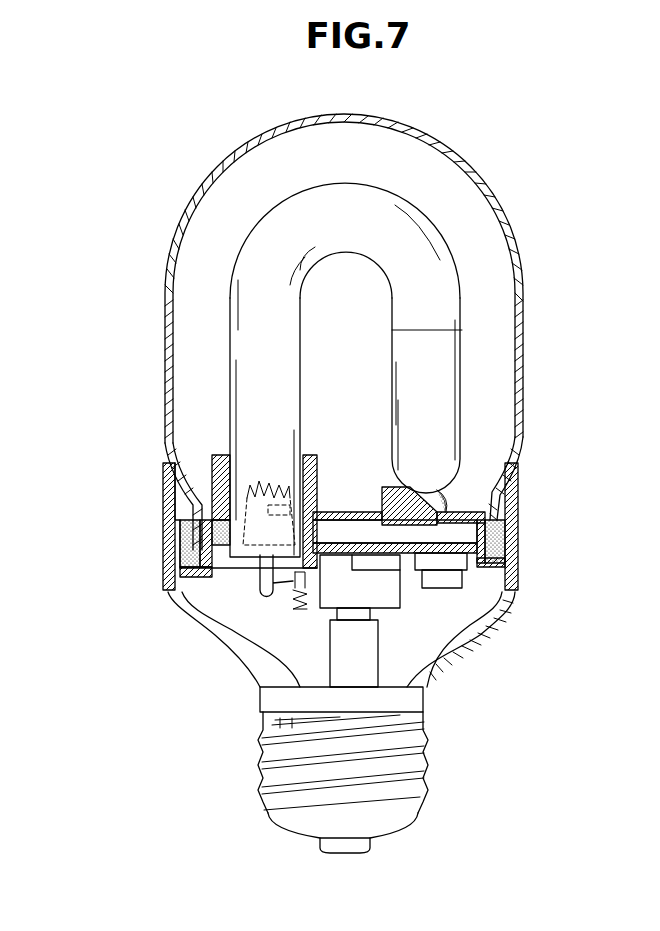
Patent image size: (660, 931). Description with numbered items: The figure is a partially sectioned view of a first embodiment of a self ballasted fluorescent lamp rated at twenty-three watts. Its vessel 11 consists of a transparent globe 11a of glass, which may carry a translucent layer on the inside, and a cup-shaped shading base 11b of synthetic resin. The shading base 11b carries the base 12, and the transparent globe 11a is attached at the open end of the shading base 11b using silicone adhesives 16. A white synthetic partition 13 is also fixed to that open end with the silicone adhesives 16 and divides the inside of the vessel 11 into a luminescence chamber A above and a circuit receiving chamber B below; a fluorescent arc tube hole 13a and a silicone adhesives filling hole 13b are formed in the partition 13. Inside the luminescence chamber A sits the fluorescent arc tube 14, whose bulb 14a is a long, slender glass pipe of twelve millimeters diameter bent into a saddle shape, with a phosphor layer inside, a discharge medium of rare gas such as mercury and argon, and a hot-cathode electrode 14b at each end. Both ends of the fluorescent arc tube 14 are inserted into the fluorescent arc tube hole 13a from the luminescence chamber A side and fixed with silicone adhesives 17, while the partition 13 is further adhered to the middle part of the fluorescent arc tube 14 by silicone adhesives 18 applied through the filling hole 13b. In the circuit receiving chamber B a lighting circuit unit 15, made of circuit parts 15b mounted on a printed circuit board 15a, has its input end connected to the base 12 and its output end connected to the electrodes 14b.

The vessel 11 is at (324, 400).
The transparent globe 11a is at (167, 330).
The shading base 11b is at (183, 620).
The base 12 is at (423, 780).
The partition 13 is at (338, 505).
The fluorescent arc tube hole 13a is at (213, 455).
The silicone adhesives filling hole 13b is at (385, 485).
The fluorescent arc tube 14 is at (334, 344).
The bulb 14a is at (285, 240).
The electrode 14b is at (217, 482).
The lighting circuit unit 15 is at (453, 635).
The printed circuit board 15a is at (470, 568).
The circuit parts 15b is at (372, 592).
The silicone adhesives 16 is at (513, 534).
The silicone adhesives 17 is at (232, 462).
The silicone adhesives 18 is at (457, 487).
The luminescence chamber A is at (202, 272).
The circuit receiving chamber B is at (263, 617).